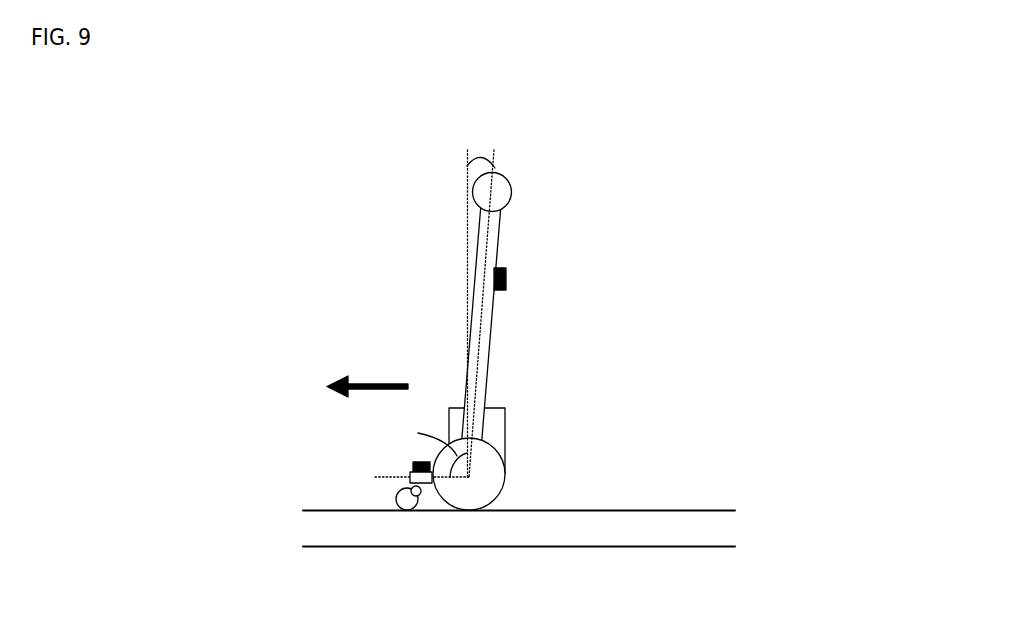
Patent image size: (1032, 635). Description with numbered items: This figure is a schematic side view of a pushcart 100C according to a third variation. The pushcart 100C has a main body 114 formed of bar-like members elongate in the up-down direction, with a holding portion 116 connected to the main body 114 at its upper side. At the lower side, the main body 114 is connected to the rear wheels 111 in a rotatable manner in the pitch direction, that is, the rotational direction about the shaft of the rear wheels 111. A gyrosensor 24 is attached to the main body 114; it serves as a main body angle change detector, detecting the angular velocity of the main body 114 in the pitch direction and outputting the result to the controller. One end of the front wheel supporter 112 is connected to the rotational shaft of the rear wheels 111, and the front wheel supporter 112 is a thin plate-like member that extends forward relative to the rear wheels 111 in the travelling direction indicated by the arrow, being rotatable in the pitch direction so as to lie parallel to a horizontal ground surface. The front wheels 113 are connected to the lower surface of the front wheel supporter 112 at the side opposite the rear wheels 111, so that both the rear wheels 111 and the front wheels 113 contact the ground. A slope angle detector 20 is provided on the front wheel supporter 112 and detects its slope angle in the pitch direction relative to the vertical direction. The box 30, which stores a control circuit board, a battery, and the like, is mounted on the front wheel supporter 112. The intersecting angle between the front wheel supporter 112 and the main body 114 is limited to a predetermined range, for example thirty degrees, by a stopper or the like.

The pushcart 100C is at (404, 132).
The holding portion 116 is at (512, 193).
The gyrosensor 24 is at (506, 277).
The main body 114 is at (487, 373).
The box 30 is at (505, 414).
The slope angle detector 20 is at (410, 467).
The front wheel 113 is at (405, 505).
The front wheel supporter 112 is at (431, 503).
The rear wheel 111 is at (473, 490).